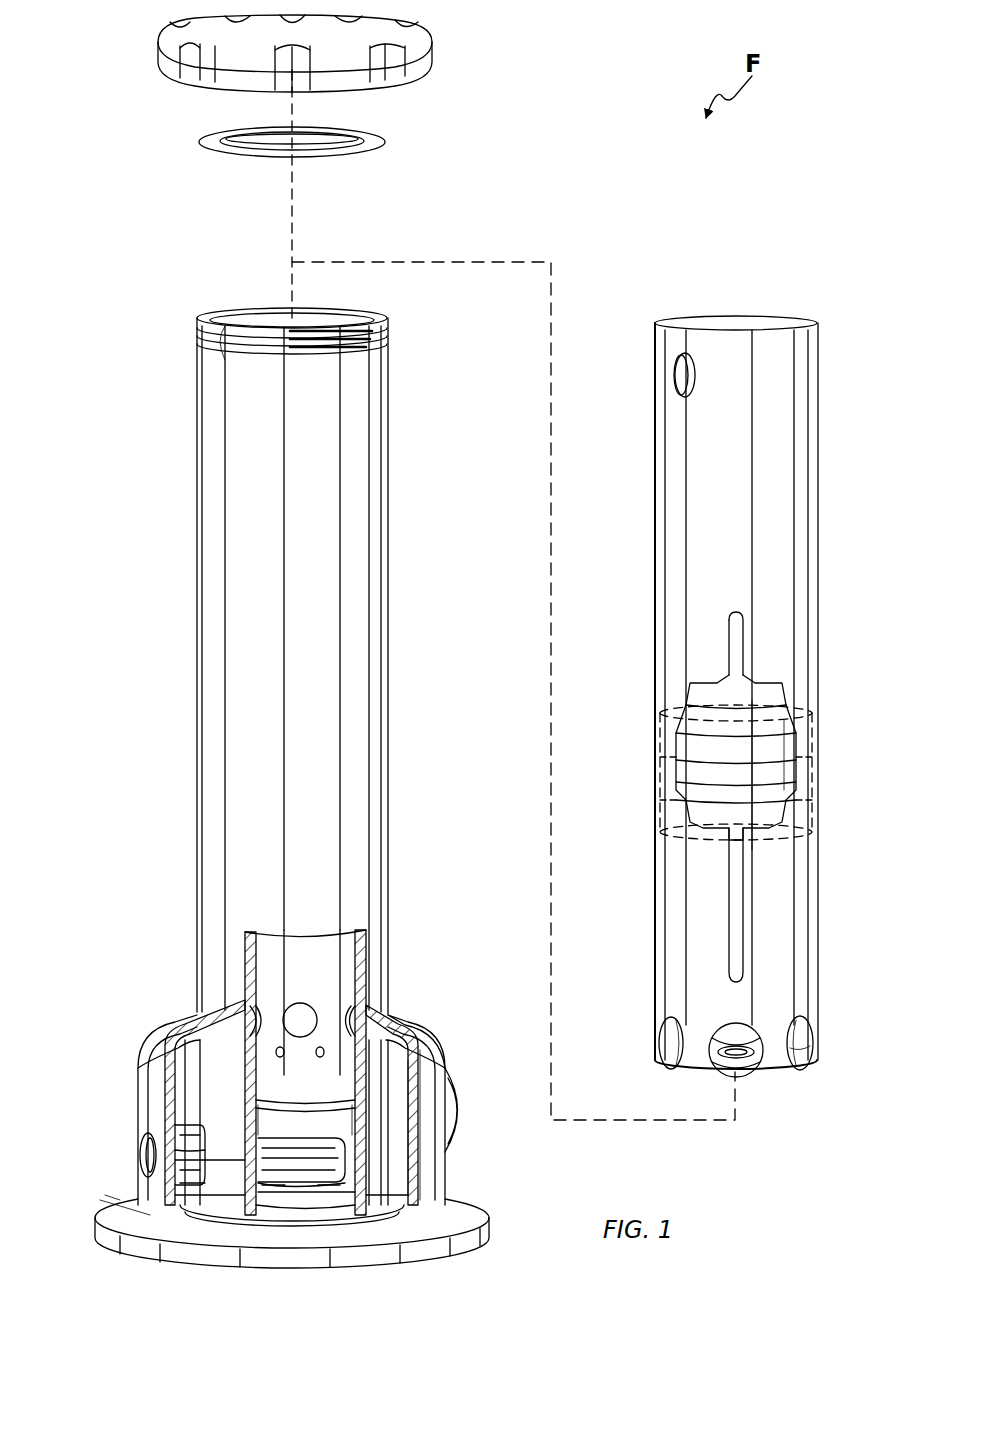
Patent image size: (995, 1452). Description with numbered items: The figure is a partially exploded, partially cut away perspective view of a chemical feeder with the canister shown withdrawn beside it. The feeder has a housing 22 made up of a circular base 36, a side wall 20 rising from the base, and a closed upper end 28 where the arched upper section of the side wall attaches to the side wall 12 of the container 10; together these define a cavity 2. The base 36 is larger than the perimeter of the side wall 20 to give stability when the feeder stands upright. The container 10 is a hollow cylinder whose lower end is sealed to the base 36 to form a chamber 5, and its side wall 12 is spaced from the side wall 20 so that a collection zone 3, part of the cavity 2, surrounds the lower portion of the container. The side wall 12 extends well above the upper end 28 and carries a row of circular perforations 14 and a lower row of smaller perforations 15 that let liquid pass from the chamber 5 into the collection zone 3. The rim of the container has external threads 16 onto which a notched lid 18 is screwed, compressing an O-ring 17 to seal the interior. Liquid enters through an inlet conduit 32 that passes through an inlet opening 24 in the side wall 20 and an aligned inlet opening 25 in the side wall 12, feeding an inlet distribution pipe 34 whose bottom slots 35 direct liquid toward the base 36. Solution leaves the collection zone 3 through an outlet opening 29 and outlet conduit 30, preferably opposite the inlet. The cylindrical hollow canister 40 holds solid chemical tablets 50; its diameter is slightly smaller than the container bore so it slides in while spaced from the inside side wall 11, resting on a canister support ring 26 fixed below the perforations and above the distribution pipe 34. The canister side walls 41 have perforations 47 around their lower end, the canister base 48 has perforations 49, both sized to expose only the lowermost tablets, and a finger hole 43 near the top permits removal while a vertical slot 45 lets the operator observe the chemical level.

The cavity 2 is at (193, 1062).
The collection zone 3 is at (402, 1160).
The chamber 5 is at (320, 1190).
The container 10 is at (170, 450).
The inside side wall 11 is at (203, 680).
The side wall 12 is at (197, 590).
The perforations 14 is at (296, 1010).
The perforations 15 is at (316, 1055).
The external threads 16 is at (386, 337).
The O-ring 17 is at (350, 134).
The lid 18 is at (155, 44).
The side wall 20 is at (138, 1092).
The housing 22 is at (118, 1055).
The inlet opening 24 is at (140, 1160).
The inlet opening 25 is at (205, 1148).
The canister support ring 26 is at (328, 1133).
The closed upper end 28 is at (398, 1018).
The outlet opening 29 is at (428, 1165).
The outlet conduit 30 is at (460, 1098).
The inlet conduit 32 is at (188, 1182).
The inlet distribution pipe 34 is at (300, 1178).
The slots 35 is at (290, 1183).
The base 36 is at (98, 1218).
The canister 40 is at (648, 537).
The side walls 41 is at (818, 494).
The finger hole 43 is at (682, 378).
The slot 45 is at (745, 912).
The perforations 47 is at (806, 1046).
The base 48 is at (782, 1070).
The perforations 49 is at (745, 1058).
The tablets 50 is at (694, 786).